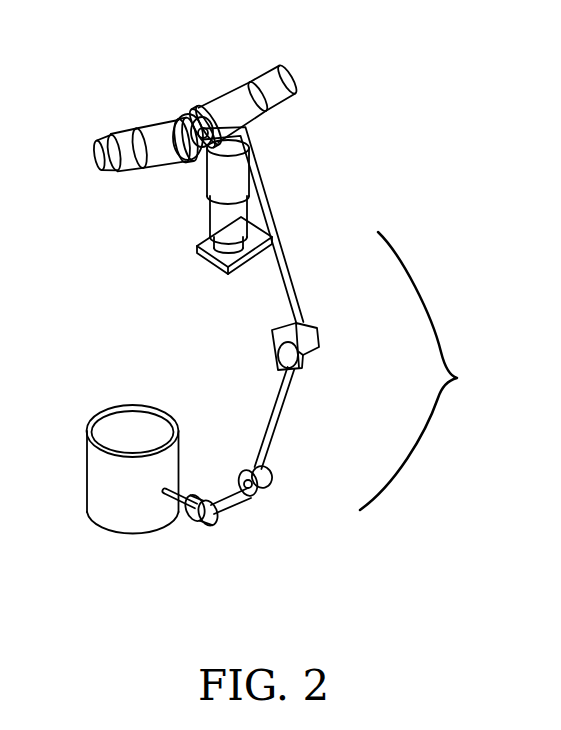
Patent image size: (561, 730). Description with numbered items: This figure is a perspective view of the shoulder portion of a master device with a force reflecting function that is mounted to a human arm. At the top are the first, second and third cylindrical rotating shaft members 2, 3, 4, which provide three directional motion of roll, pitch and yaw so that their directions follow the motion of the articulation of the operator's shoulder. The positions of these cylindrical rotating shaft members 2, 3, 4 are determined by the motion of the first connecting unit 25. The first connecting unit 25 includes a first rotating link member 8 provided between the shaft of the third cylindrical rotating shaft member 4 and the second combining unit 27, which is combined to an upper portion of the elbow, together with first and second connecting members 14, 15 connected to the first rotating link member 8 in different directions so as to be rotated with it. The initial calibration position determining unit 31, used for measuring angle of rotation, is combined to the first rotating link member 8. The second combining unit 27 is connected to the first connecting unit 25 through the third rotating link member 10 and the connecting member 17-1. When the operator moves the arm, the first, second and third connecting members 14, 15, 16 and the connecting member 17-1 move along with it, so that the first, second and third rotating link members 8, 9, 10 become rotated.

The first cylindrical rotating shaft member 2 is at (210, 216).
The second cylindrical rotating shaft member 3 is at (252, 70).
The third cylindrical rotating shaft member 4 is at (127, 128).
The first rotating link member 8 is at (318, 330).
The second rotating link member 9 is at (272, 474).
The third rotating link member 10 is at (214, 512).
The first connecting member 14 is at (287, 256).
The second connecting member 15 is at (284, 416).
The third connecting member 16 is at (240, 474).
The connecting member 17-1 is at (197, 497).
The first connecting unit 25 is at (428, 371).
The second combining unit 27 is at (87, 458).
The initial calibration position determining unit 31 is at (305, 347).